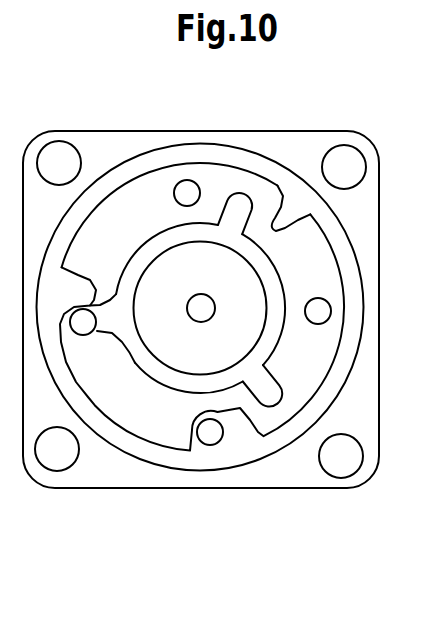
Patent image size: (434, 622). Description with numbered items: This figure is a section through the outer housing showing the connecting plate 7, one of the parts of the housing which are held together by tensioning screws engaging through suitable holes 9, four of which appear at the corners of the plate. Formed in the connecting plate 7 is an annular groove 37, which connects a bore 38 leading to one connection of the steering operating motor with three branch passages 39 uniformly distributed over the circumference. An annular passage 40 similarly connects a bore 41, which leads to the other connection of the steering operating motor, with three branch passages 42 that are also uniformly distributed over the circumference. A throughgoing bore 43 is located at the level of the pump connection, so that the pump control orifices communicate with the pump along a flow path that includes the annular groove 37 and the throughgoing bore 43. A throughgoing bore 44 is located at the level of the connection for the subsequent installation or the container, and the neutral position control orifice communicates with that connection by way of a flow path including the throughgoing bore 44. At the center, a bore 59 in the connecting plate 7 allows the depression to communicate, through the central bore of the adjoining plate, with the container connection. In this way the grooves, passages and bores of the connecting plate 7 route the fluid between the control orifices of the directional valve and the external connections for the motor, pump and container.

The connecting plate 7 is at (107, 143).
The holes 9 is at (343, 160).
The annular groove 37 is at (235, 158).
The bore 38 is at (212, 436).
The branch passages 39 is at (279, 220).
The annular passage 40 is at (197, 385).
The bore 41 is at (84, 324).
The branch passages 42 is at (245, 208).
The throughgoing bore 43 is at (187, 190).
The throughgoing bore 44 is at (319, 322).
The bore 59 is at (197, 313).